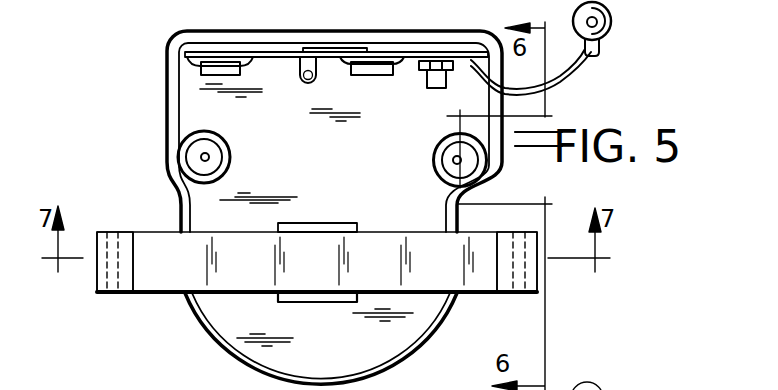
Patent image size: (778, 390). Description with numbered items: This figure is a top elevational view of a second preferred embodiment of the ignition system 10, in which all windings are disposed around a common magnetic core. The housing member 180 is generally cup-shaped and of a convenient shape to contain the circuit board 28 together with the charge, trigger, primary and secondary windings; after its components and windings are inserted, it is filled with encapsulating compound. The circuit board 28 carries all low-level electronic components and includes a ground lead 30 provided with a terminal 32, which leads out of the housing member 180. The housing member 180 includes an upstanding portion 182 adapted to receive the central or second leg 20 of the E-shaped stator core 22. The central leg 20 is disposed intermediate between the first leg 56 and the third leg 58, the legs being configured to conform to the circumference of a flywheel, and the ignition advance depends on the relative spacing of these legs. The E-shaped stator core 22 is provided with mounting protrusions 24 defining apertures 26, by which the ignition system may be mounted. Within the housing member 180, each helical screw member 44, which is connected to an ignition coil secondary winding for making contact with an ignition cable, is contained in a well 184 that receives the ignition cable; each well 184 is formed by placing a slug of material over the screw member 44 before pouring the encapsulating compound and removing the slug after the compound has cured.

The ignition system 10 is at (160, 20).
The central leg 20 is at (322, 278).
The E-shaped stator core 22 is at (478, 301).
The mounting protrusions 24 is at (96, 290).
The apertures 26 is at (110, 294).
The circuit board 28 is at (376, 52).
The ground lead 30 is at (582, 86).
The terminal 32 is at (612, 27).
The helical screw member 44 is at (208, 159).
The first leg 56 is at (160, 290).
The third leg 58 is at (446, 296).
The housing member 180 is at (455, 31).
The upstanding portion 182 is at (332, 223).
The well 184 is at (228, 140).